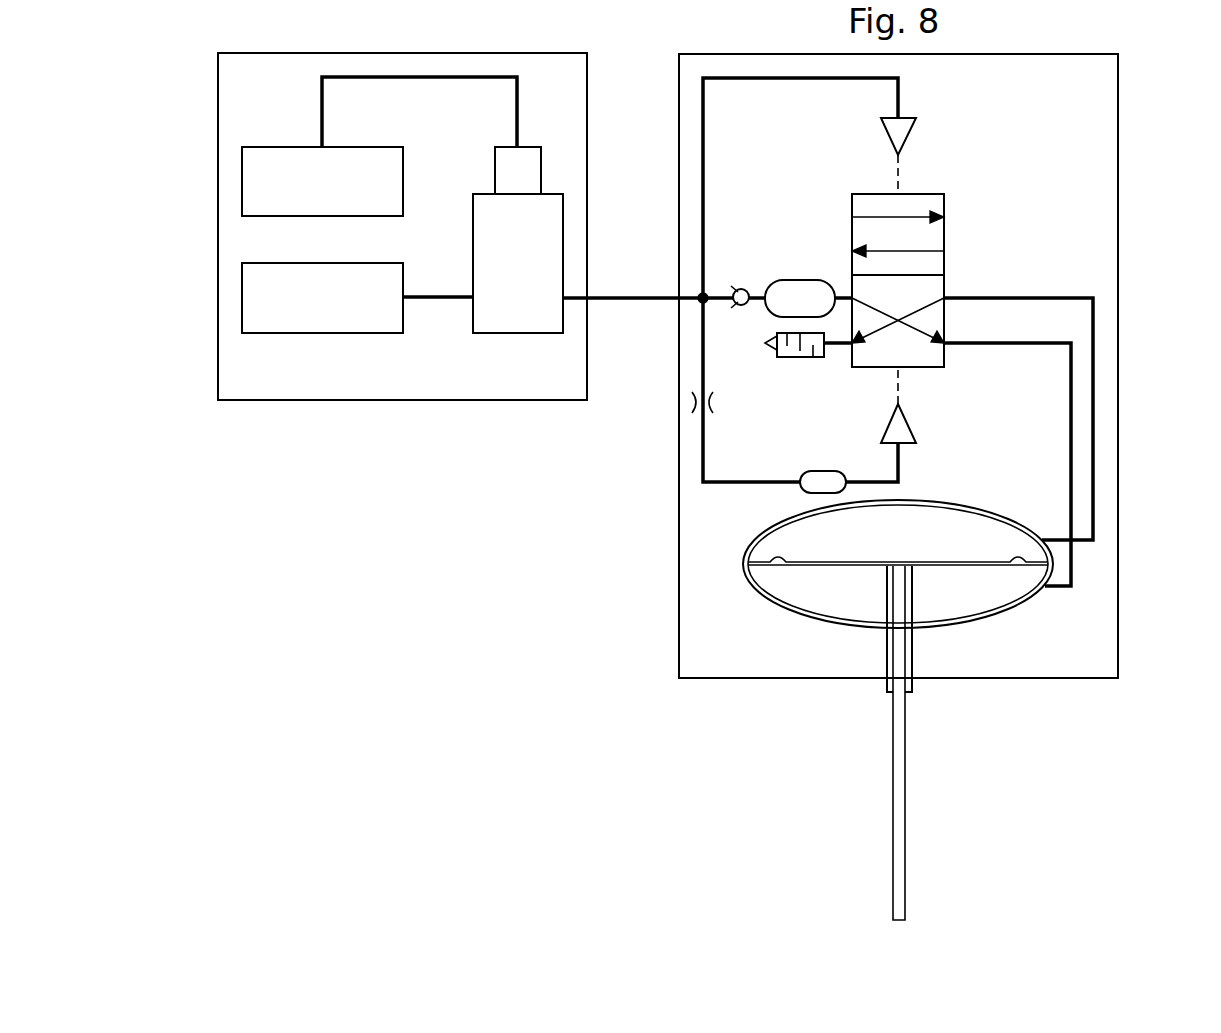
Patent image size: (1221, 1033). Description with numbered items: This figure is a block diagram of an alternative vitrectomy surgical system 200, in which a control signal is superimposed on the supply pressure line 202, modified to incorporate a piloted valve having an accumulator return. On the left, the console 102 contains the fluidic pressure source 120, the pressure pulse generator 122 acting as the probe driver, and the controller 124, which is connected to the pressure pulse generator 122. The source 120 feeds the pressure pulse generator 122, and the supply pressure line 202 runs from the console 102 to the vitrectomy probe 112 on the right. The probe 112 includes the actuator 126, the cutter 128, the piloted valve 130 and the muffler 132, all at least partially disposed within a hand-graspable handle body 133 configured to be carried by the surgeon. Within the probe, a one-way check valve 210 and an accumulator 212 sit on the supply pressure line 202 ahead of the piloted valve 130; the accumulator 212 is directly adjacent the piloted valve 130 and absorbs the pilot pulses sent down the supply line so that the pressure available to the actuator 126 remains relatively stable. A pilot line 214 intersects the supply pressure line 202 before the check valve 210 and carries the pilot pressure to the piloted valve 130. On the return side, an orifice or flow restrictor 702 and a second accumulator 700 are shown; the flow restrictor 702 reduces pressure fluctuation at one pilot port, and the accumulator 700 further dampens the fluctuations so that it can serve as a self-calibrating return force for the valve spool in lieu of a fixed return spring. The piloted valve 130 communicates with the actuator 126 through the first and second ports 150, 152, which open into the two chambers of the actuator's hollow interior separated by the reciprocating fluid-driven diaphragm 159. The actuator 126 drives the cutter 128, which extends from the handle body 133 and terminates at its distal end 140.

The base housing 102 is at (206, 222).
The vitrectomy probe 112 is at (1128, 345).
The fluidic pressure source 120 is at (313, 333).
The pressure pulse generator 122 is at (541, 277).
The controller 124 is at (288, 147).
The actuator 126 is at (770, 611).
The cutter 128 is at (915, 797).
The piloted valve 130 is at (944, 235).
The muffler 132 is at (800, 362).
The handle body 133 is at (1118, 235).
The distal end 140 is at (906, 878).
The first port 150 is at (1048, 530).
The second port 152 is at (1048, 598).
The diaphragm 159 is at (855, 556).
The surgical system 200 is at (440, 478).
The supply pressure line 202 is at (645, 296).
The one-way check valve 210 is at (738, 288).
The accumulator 212 is at (806, 280).
The pilot line 214 is at (800, 82).
The accumulator 700 is at (830, 471).
The flow restrictor 702 is at (712, 402).